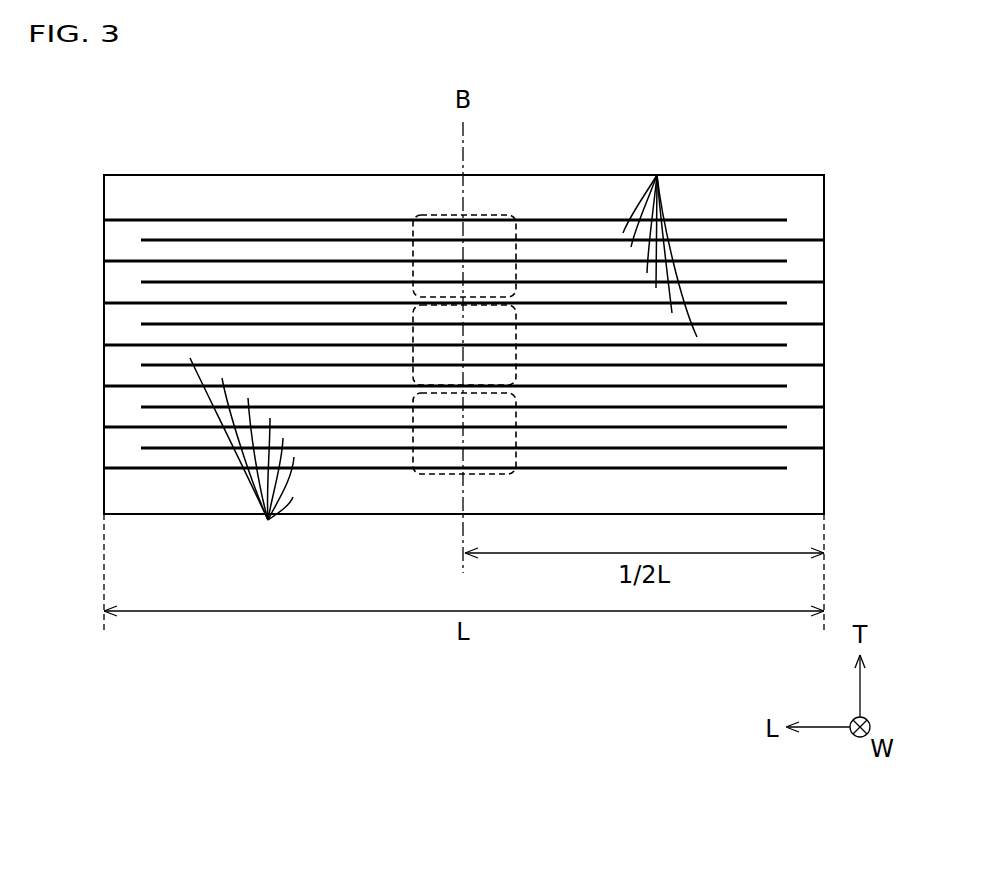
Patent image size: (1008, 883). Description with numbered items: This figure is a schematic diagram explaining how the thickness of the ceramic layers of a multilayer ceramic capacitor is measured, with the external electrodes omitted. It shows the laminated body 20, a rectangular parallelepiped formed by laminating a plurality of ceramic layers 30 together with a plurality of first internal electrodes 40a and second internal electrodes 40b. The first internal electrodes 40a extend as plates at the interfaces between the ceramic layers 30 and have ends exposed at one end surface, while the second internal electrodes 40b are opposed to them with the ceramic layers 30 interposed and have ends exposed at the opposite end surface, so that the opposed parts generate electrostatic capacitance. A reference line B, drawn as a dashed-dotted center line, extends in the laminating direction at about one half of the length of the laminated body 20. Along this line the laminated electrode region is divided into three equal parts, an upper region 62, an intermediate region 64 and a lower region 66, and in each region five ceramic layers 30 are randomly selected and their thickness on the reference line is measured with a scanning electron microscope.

The laminated body 20 is at (581, 166).
The ceramic layers 30 is at (443, 349).
The first internal electrodes 40a is at (798, 282).
The second internal electrodes 40b is at (127, 261).
The upper region 62 is at (433, 214).
The intermediate region 64 is at (517, 332).
The lower region 66 is at (437, 474).